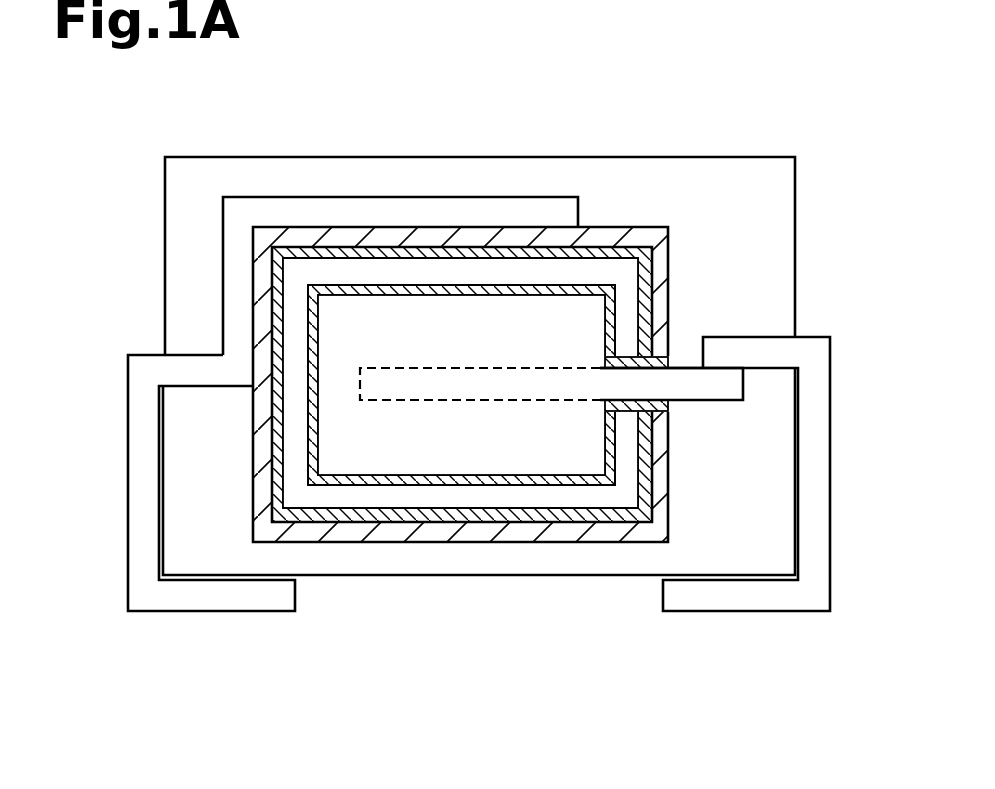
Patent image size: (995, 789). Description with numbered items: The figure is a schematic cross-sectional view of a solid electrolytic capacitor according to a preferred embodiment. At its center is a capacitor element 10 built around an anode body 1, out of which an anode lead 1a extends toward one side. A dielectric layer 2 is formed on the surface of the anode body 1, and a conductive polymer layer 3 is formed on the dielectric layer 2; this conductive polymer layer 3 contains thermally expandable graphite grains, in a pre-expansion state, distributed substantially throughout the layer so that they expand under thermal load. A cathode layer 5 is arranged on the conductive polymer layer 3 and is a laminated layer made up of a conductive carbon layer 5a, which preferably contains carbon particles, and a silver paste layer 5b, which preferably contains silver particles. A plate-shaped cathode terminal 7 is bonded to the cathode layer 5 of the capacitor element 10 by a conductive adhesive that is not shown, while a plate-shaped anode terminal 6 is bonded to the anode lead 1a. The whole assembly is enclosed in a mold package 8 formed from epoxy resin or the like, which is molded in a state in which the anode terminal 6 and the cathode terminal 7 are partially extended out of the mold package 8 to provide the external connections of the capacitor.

The anode body 1 is at (553, 452).
The anode lead 1a is at (722, 381).
The dielectric layer 2 is at (508, 478).
The conductive polymer layer 3 is at (453, 498).
The cathode layer 5 is at (460, 296).
The conductive carbon layer 5a is at (432, 240).
The silver paste layer 5b is at (493, 232).
The anode terminal 6 is at (692, 600).
The cathode terminal 7 is at (274, 600).
The mold package 8 is at (292, 172).
The capacitor element 10 is at (512, 361).